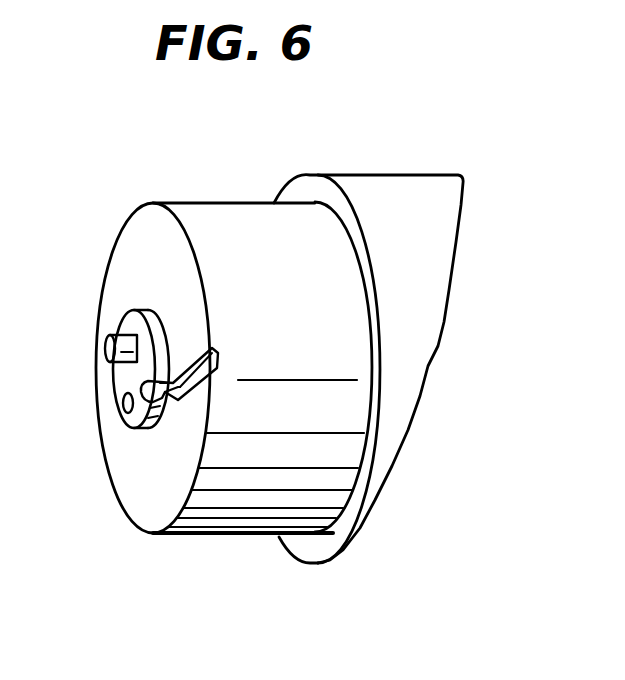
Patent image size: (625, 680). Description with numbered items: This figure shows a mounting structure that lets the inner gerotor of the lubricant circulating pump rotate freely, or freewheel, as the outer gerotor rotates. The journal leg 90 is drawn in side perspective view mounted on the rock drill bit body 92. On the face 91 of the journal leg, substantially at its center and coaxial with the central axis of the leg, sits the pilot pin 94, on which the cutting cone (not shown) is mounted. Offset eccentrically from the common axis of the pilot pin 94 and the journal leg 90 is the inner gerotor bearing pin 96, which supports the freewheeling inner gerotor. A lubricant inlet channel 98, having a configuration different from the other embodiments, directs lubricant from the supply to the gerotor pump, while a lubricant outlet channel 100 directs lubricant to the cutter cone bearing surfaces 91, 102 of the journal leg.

The journal leg 90 is at (222, 203).
The face 91 is at (130, 233).
The rock drill bit body 92 is at (438, 254).
The pilot pin 94 is at (147, 312).
The inner gerotor bearing pin 96 is at (106, 347).
The lubricant inlet channel 98 is at (123, 403).
The lubricant outlet channel 100 is at (180, 410).
The cutter cone bearing surface 102 is at (237, 478).